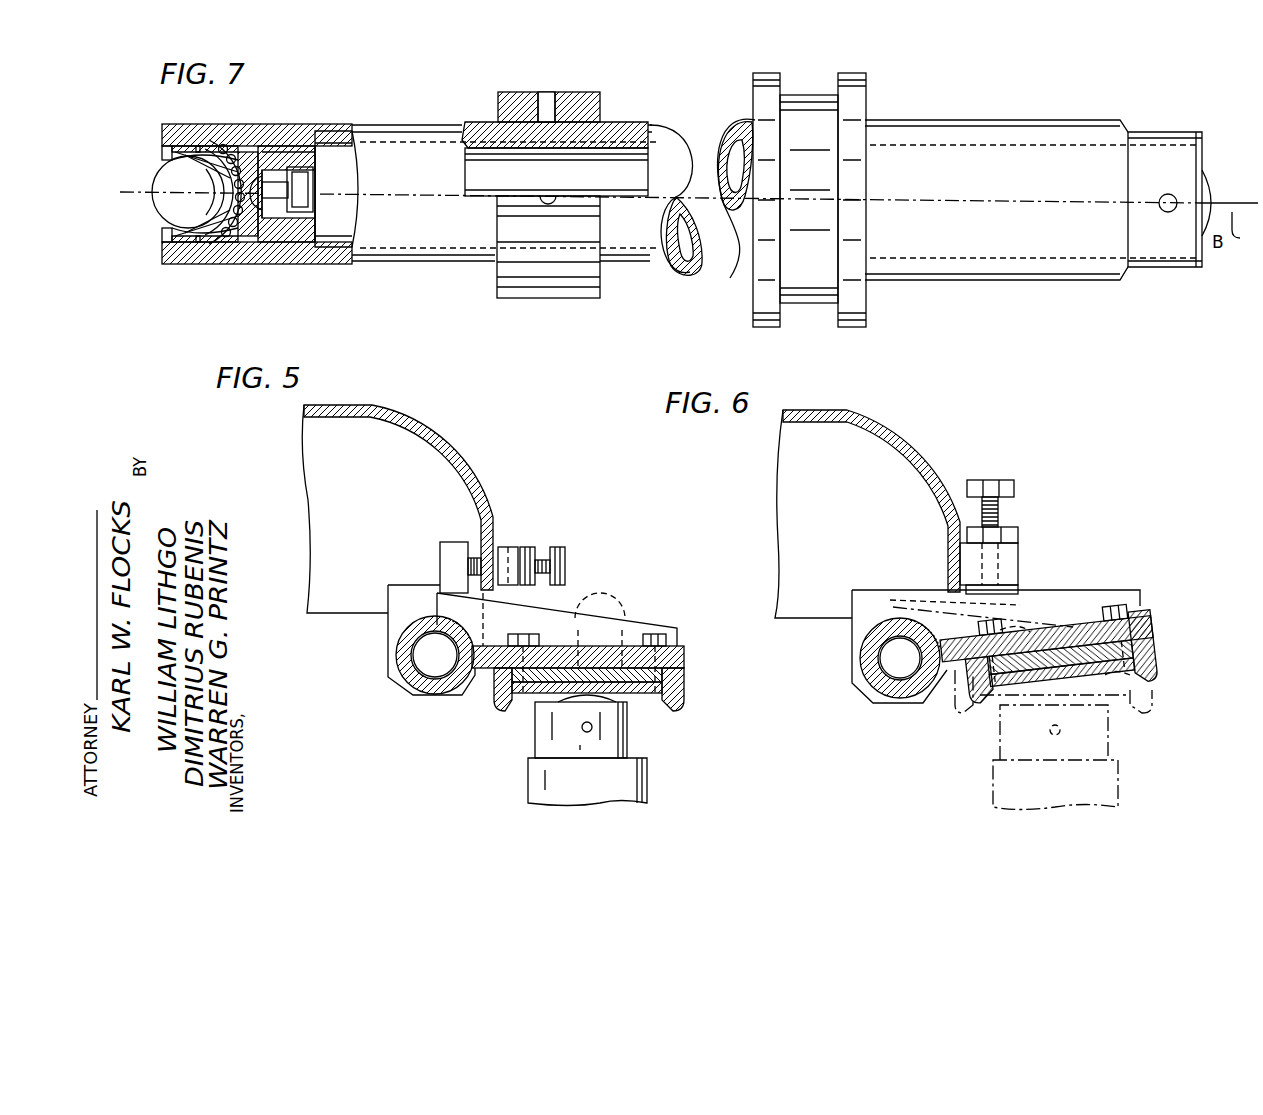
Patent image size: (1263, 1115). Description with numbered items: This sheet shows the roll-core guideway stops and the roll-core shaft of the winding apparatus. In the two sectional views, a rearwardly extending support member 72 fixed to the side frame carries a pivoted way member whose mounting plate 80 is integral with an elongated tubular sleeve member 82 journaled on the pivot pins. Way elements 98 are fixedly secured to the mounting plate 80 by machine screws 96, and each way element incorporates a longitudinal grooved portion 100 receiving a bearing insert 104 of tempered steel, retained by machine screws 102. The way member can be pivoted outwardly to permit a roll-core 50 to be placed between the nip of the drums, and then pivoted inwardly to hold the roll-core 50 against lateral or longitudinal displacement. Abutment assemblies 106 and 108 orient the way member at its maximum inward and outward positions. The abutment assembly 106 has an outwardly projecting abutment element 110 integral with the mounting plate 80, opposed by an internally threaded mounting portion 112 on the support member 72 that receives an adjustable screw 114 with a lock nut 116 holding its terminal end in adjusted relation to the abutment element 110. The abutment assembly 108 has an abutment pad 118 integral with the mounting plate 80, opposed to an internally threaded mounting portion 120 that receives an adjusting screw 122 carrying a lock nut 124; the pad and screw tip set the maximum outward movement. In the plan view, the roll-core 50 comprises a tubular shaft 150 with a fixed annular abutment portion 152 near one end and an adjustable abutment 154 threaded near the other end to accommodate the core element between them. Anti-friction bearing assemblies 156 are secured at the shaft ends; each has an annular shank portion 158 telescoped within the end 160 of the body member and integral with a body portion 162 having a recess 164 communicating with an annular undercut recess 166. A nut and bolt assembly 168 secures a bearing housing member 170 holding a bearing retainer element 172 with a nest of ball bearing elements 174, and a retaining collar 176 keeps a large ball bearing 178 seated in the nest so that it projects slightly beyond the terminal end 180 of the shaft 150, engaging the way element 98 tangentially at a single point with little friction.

In FIG. 7, the roll-core 50 is at (769, 330).
In FIG. 5, the roll-core 50 is at (650, 786).
In FIG. 6, the roll-core 50 is at (1118, 773).
In FIG. 5, the support member 72 is at (373, 406).
In FIG. 6, the support member 72 is at (866, 414).
In FIG. 5, the mounting plate 80 is at (685, 661).
In FIG. 6, the mounting plate 80 is at (1157, 619).
In FIG. 5, the tubular sleeve member 82 is at (437, 694).
In FIG. 6, the tubular sleeve member 82 is at (903, 698).
In FIG. 6, the machine screws 96 is at (1118, 610).
In FIG. 5, the way elements 98 is at (685, 689).
In FIG. 6, the way elements 98 is at (1160, 642).
In FIG. 5, the grooved portion 100 is at (596, 660).
In FIG. 6, the grooved portion 100 is at (1078, 657).
In FIG. 5, the machine screws 102 is at (578, 598).
In FIG. 6, the machine screws 102 is at (1013, 622).
In FIG. 5, the bearing insert 104 is at (641, 700).
In FIG. 6, the bearing insert 104 is at (1052, 677).
In FIG. 5, the abutment assembly 106 is at (516, 546).
In FIG. 6, the abutment assembly 108 is at (1019, 532).
In FIG. 5, the abutment element 110 is at (439, 558).
In FIG. 5, the internally threaded mounting portion 112 is at (500, 546).
In FIG. 5, the adjustable screw 114 is at (566, 566).
In FIG. 5, the lock nut 116 is at (527, 548).
In FIG. 6, the abutment pad 118 is at (1020, 592).
In FIG. 6, the internally threaded mounting portion 120 is at (1019, 570).
In FIG. 6, the adjusting screw 122 is at (1016, 487).
In FIG. 6, the lock nut 124 is at (1019, 535).
In FIG. 7, the tubular shaft 150 is at (620, 270).
In FIG. 7, the fixed annular abutment portion 152 is at (808, 303).
In FIG. 7, the adjustable abutment 154 is at (512, 290).
In FIG. 7, the anti-friction bearing assembly 156 is at (228, 270).
In FIG. 7, the annular shank portion 158 is at (307, 140).
In FIG. 7, the end 160 is at (292, 262).
In FIG. 7, the body portion 162 is at (167, 262).
In FIG. 7, the recess 164 is at (172, 146).
In FIG. 7, the annular undercut recess 166 is at (243, 133).
In FIG. 7, the nut and bolt assembly 168 is at (308, 213).
In FIG. 7, the bearing housing member 170 is at (250, 262).
In FIG. 7, the bearing retainer element 172 is at (270, 157).
In FIG. 7, the ball bearing elements 174 is at (200, 265).
In FIG. 7, the retaining collar 176 is at (170, 240).
In FIG. 7, the large ball bearing 178 is at (198, 212).
In FIG. 7, the terminal end 180 is at (168, 162).